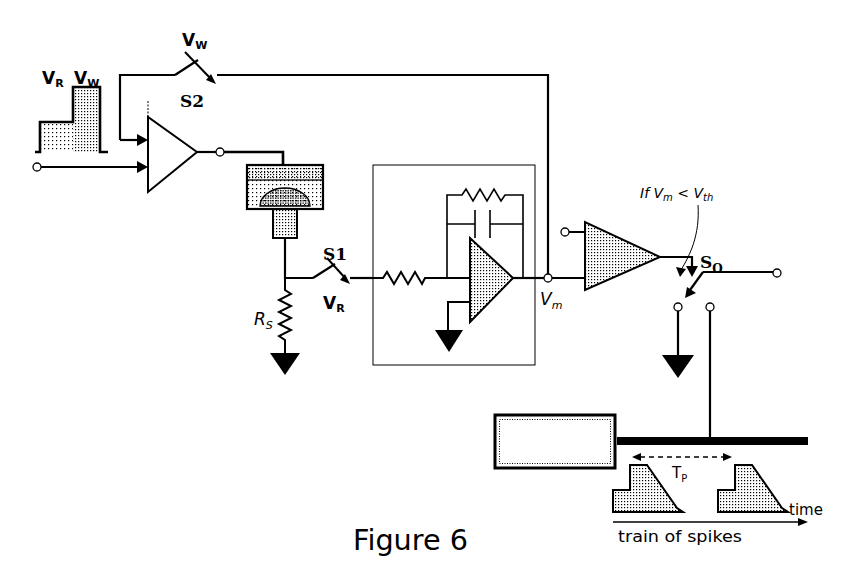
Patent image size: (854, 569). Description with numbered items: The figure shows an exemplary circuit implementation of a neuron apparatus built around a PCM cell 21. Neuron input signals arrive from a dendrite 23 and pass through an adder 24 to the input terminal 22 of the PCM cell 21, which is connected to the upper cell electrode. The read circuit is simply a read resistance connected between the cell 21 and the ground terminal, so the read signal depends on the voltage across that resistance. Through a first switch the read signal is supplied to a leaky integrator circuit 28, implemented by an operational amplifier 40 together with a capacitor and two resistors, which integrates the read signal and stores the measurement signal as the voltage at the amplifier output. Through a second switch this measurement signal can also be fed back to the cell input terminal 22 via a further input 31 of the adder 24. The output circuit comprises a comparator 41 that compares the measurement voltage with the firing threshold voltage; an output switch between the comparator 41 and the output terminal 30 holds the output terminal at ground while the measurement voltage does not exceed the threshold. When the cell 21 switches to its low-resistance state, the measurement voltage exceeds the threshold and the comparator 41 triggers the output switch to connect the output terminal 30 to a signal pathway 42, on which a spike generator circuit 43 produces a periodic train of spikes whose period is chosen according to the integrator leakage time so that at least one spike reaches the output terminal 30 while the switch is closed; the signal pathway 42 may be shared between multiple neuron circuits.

The PCM cell 21 is at (324, 172).
The input terminal 22 is at (226, 150).
The dendrite 23 is at (133, 168).
The adder 24 is at (172, 176).
The integrator circuit 28 is at (446, 166).
The output terminal 30 is at (775, 270).
The further input 31 is at (124, 140).
The operational amplifier 40 is at (485, 306).
The comparator 41 is at (600, 230).
The signal pathway 42 is at (773, 437).
The spike generator circuit 43 is at (559, 415).